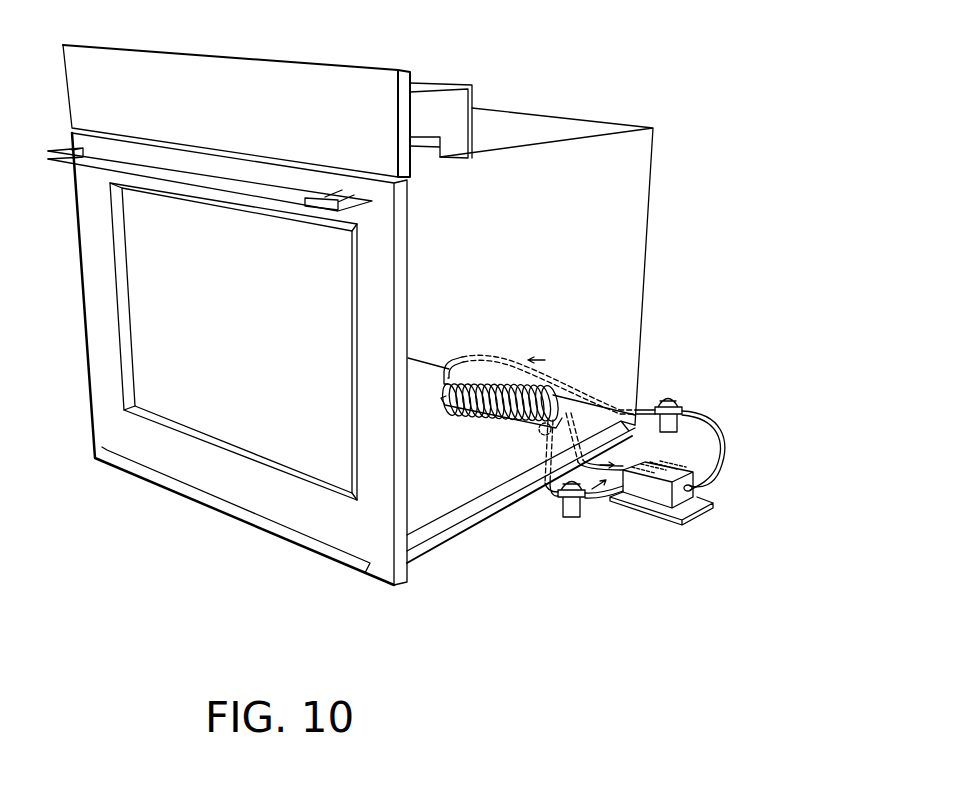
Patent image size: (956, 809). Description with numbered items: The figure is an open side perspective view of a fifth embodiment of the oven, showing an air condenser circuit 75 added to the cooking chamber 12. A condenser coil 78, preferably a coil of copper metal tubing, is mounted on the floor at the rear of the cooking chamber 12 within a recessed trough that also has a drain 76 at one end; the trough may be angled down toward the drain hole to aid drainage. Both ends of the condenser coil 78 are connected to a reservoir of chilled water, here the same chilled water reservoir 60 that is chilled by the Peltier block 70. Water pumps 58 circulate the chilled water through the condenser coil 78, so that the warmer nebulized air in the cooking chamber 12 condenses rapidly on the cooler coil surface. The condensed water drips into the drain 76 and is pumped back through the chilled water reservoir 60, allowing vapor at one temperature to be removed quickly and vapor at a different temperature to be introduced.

The cooking chamber 12 is at (350, 315).
The water pump 58 is at (683, 405).
The chilled water reservoir 60 is at (660, 462).
The Peltier block 70 is at (712, 507).
The condenser circuit 75 is at (703, 353).
The drain 76 is at (548, 433).
The condenser coil 78 is at (470, 417).